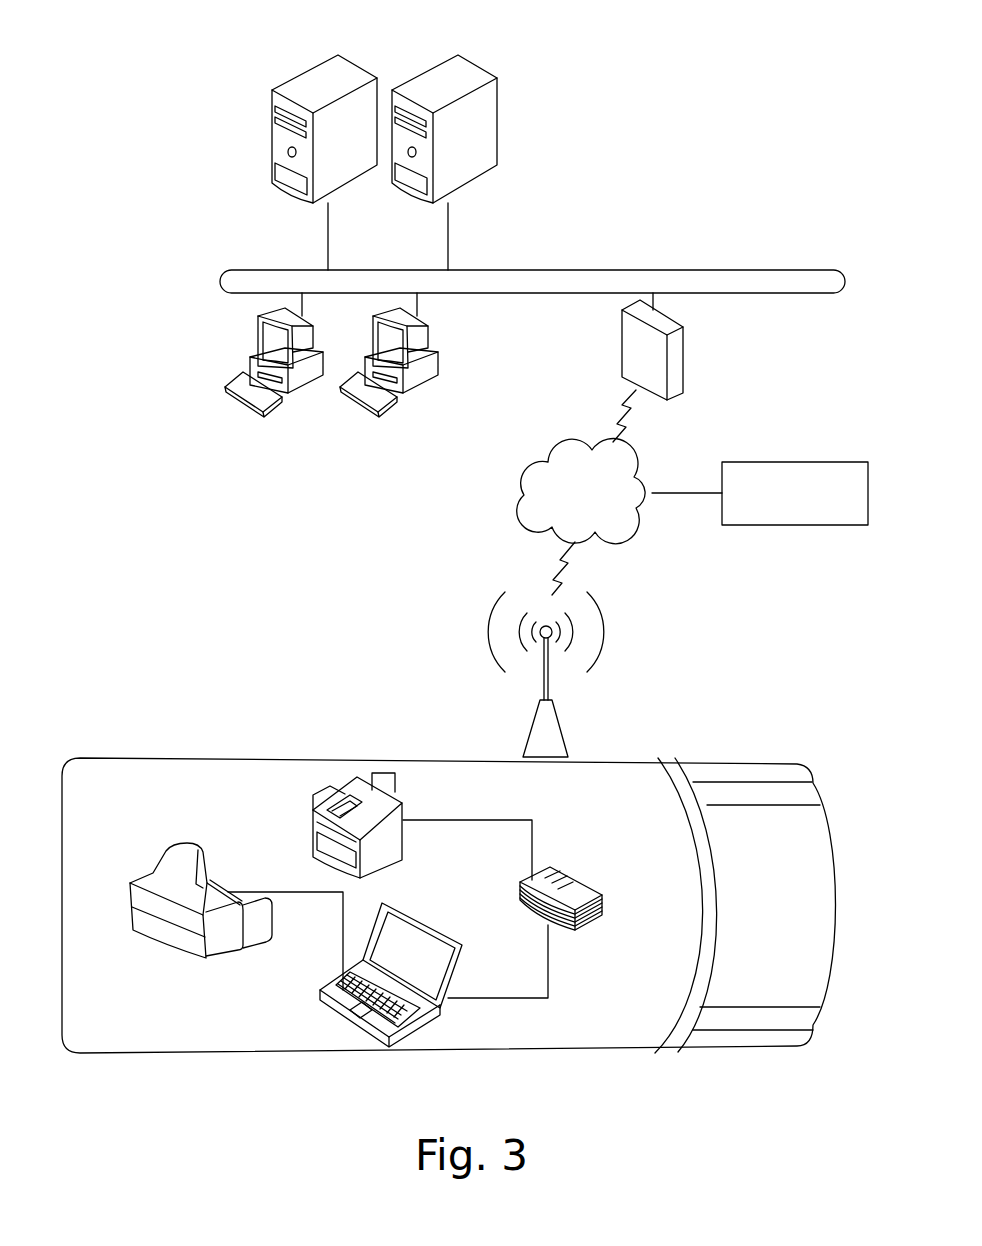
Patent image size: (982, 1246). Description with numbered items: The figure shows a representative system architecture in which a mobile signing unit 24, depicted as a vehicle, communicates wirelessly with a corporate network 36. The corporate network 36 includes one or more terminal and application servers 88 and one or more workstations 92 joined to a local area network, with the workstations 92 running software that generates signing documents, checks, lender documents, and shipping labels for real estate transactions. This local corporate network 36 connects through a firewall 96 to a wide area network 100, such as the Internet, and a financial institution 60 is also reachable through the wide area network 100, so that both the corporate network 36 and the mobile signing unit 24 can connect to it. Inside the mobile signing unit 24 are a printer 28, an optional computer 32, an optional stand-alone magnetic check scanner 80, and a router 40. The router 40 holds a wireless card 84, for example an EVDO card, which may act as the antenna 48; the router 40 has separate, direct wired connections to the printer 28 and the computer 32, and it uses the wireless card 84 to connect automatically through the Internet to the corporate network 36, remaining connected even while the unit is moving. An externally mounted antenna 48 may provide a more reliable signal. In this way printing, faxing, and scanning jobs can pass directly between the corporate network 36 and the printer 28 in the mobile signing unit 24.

The mobile signing unit 24 is at (249, 997).
The printer 28 is at (402, 810).
The computer 32 is at (415, 917).
The corporate network 36 is at (592, 270).
The router 40 is at (595, 920).
The antenna 48 is at (562, 730).
The financial institution 60 is at (793, 525).
The magnetic check scanner 80 is at (210, 863).
The wireless card 84 is at (572, 880).
The terminal and application servers 88 is at (415, 77).
The workstations 92 is at (350, 393).
The firewall 96 is at (685, 365).
The wide area network 100 is at (630, 470).